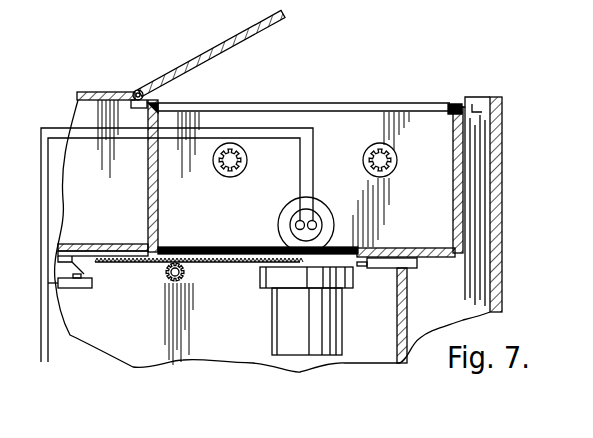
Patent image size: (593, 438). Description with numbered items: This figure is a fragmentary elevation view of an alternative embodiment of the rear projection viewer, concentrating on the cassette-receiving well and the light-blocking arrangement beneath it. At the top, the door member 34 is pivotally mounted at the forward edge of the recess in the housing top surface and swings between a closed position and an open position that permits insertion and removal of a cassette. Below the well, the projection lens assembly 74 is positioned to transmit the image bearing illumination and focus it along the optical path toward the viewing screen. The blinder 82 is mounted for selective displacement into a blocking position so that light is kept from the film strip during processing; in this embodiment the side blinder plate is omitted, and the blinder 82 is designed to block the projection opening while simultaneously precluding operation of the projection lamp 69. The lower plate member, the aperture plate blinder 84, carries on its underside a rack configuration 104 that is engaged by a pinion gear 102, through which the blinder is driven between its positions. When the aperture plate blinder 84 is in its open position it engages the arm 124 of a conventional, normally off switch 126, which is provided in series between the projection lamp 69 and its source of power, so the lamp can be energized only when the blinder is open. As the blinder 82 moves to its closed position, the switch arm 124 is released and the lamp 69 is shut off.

The door member 34 is at (191, 62).
The blinder member 82 is at (147, 244).
The switch arm 124 is at (92, 234).
The rack configuration 104 is at (124, 262).
The aperture plate blinder 84 is at (142, 262).
The normally off switch 126 is at (78, 290).
The pinion gear 102 is at (186, 278).
The projection lens assembly 74 is at (272, 312).
The projection lamp 69 is at (323, 218).